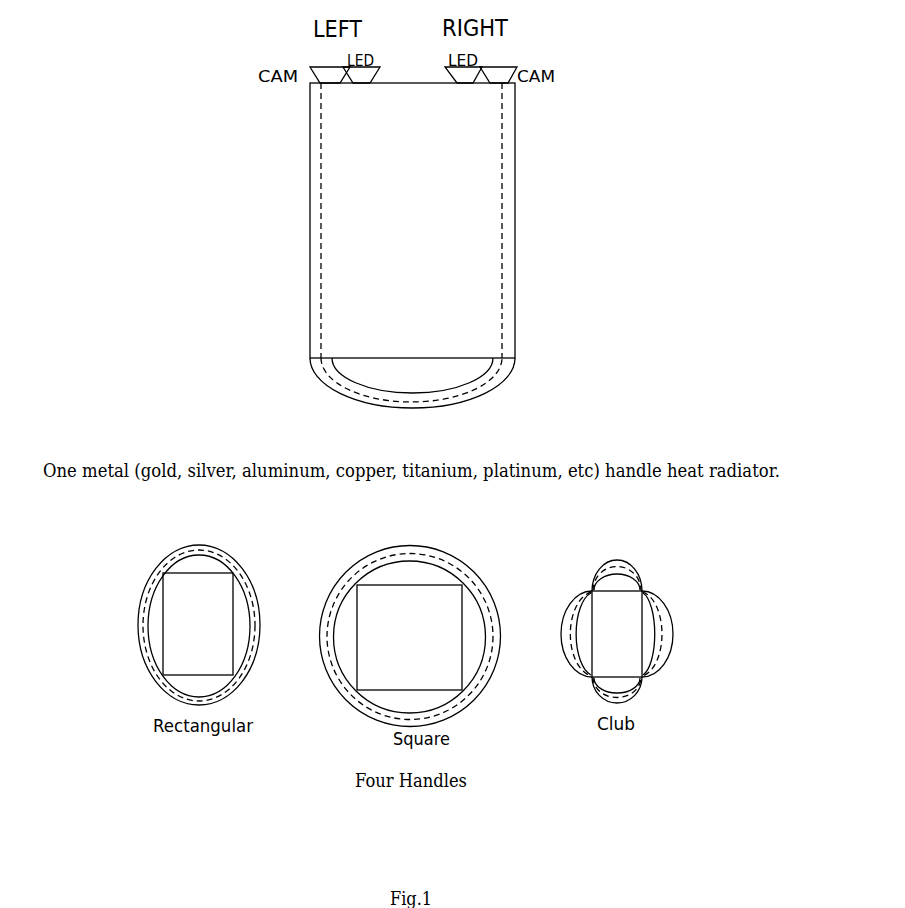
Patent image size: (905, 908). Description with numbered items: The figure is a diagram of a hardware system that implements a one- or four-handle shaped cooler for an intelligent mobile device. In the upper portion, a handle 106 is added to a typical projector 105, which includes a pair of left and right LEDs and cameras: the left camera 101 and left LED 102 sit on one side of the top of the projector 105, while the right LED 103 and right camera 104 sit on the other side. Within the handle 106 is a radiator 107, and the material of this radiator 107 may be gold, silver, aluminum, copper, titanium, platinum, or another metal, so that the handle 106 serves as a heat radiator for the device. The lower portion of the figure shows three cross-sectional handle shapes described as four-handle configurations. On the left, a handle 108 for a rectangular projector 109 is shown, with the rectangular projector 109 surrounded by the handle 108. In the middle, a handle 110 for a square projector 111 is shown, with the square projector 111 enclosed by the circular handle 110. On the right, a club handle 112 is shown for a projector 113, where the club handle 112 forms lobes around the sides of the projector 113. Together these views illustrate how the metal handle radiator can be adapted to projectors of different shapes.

The left camera 101 is at (258, 80).
The left LED 102 is at (347, 55).
The right LED 103 is at (480, 53).
The right camera 104 is at (550, 82).
The projector 105 is at (515, 195).
The handle 106 is at (343, 396).
The radiator 107 is at (502, 305).
The handle for rectangular projector 108 is at (192, 588).
The rectangular projector 109 is at (147, 660).
The handle for square projector 110 is at (397, 588).
The square projector 111 is at (358, 702).
The club handle 112 is at (618, 615).
The projector 113 is at (668, 632).